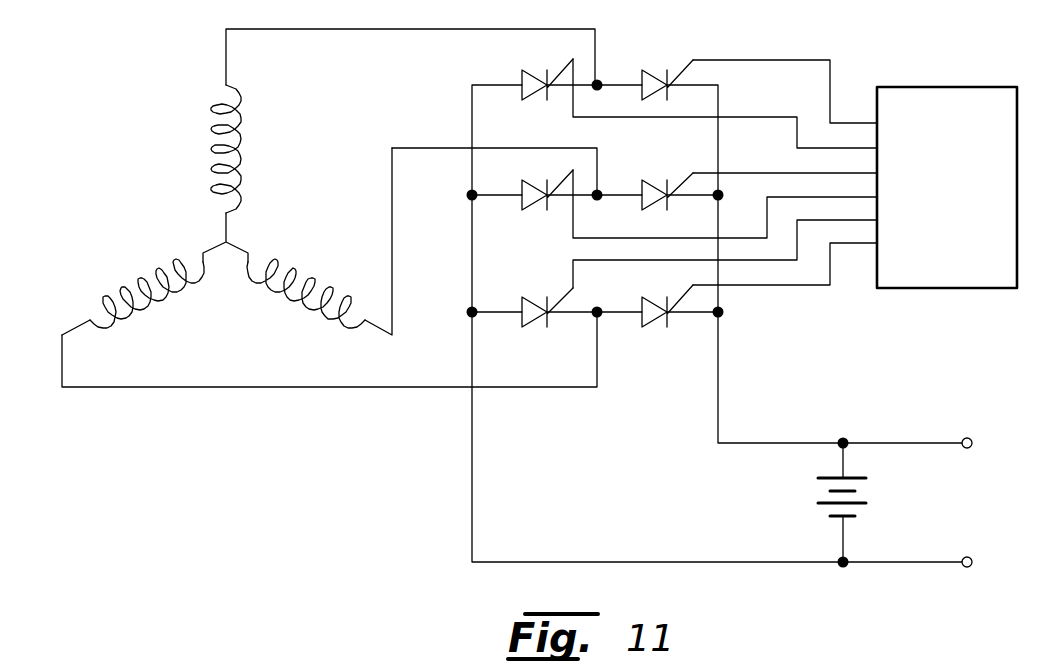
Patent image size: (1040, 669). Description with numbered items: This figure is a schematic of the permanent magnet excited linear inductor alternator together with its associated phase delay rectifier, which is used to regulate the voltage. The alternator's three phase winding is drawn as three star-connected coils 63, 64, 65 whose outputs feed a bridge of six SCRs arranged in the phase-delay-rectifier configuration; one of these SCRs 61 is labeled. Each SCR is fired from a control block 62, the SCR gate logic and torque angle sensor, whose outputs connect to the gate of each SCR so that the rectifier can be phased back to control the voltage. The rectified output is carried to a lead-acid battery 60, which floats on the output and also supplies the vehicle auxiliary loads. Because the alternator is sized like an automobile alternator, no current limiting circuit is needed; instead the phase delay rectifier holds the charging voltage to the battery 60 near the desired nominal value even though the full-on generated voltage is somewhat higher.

The lead-acid battery 60 is at (865, 503).
The SCR 61 is at (655, 76).
The SCR gate logic and torque angle sensor 62 is at (928, 87).
The motor winding 63 is at (122, 282).
The motor winding 64 is at (216, 148).
The motor winding 65 is at (314, 282).